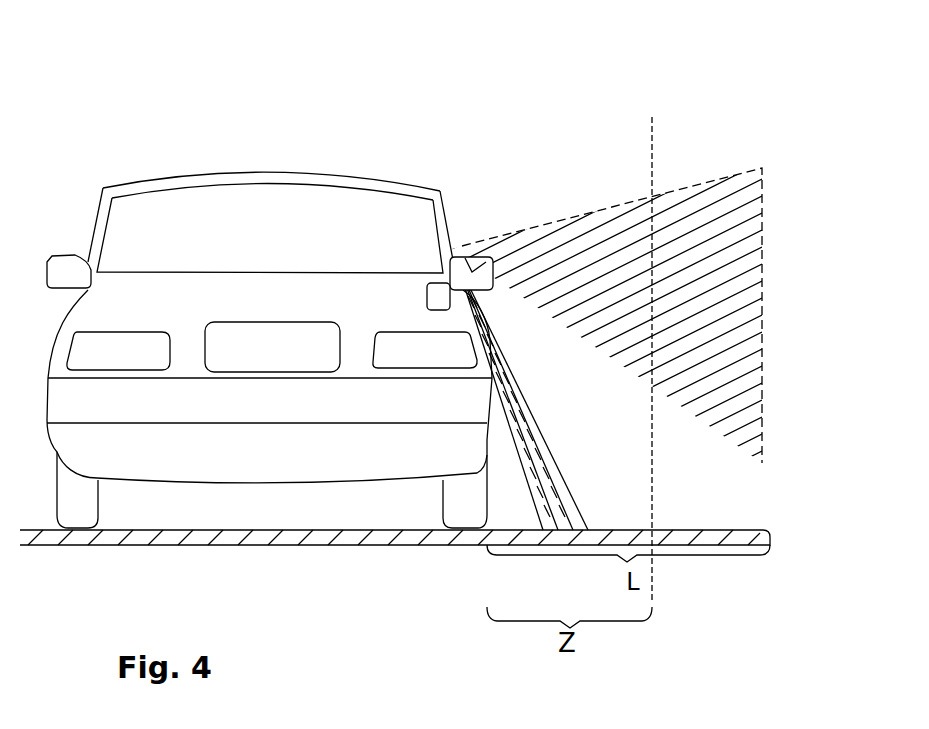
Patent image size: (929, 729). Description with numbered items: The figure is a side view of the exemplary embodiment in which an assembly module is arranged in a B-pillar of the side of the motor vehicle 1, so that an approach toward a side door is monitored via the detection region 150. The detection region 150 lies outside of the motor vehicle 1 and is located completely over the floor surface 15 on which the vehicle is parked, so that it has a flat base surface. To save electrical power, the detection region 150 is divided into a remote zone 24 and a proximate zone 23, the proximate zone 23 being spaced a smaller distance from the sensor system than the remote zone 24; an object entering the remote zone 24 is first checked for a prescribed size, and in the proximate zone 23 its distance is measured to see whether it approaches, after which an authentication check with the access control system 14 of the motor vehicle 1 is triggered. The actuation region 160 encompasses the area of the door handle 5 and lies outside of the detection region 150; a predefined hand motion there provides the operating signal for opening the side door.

The motor vehicle 1 is at (220, 130).
The access control system 14 is at (438, 284).
The door handle 5 is at (488, 302).
The proximate zone 23 is at (575, 251).
The remote zone 24 is at (707, 196).
The detection region 150 is at (740, 291).
The actuation region 160 is at (574, 509).
The floor surface 15 is at (773, 529).